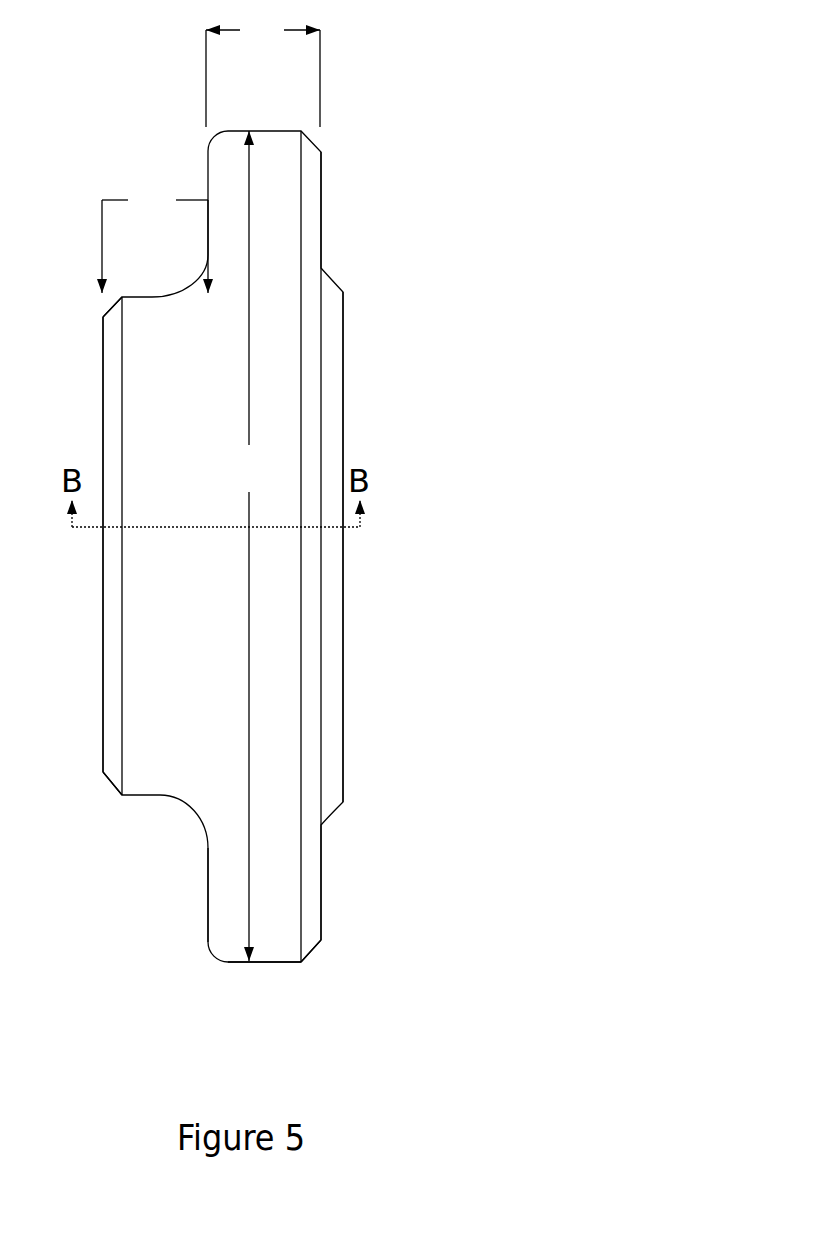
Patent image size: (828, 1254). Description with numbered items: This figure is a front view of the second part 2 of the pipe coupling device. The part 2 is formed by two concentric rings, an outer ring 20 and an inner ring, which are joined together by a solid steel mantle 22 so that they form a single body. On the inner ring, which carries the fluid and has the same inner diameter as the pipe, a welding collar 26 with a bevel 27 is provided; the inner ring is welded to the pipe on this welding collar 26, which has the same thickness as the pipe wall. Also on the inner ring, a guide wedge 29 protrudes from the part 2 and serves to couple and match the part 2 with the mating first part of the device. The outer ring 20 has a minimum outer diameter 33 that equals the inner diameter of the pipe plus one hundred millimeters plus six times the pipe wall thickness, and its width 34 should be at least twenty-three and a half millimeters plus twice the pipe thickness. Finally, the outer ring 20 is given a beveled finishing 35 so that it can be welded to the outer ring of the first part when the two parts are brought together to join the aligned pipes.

The part 2 is at (477, 267).
The outer ring 20 is at (259, 965).
The solid steel mantle 22 is at (205, 891).
The welding collar 26 is at (155, 237).
The bevel 27 is at (107, 786).
The guide wedge 29 is at (340, 280).
The outer diameter 33 is at (248, 546).
The width 34 is at (263, 68).
The beveled finishing 35 is at (318, 953).